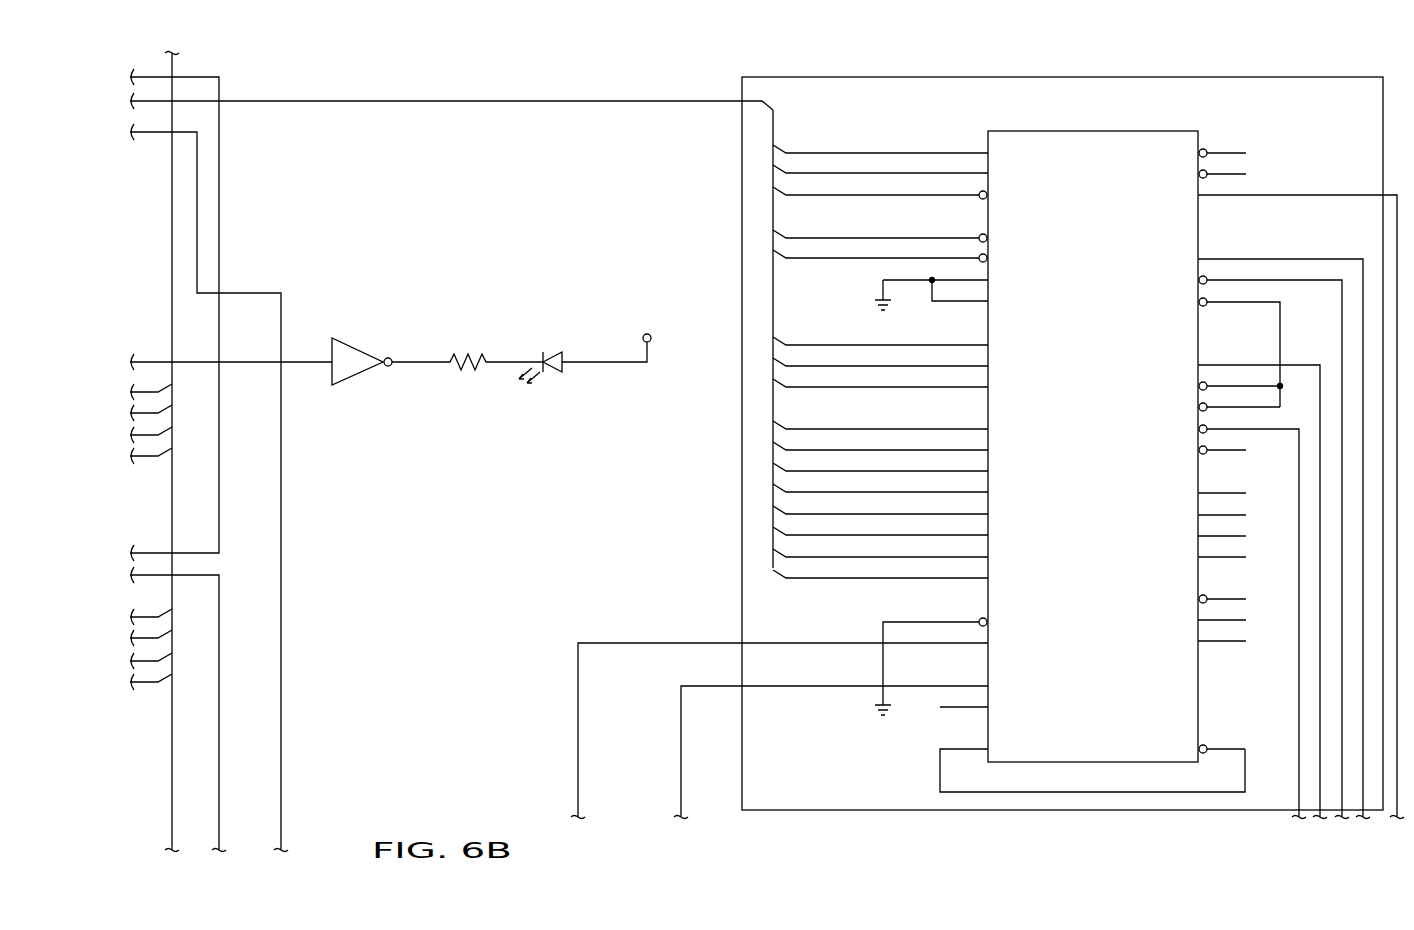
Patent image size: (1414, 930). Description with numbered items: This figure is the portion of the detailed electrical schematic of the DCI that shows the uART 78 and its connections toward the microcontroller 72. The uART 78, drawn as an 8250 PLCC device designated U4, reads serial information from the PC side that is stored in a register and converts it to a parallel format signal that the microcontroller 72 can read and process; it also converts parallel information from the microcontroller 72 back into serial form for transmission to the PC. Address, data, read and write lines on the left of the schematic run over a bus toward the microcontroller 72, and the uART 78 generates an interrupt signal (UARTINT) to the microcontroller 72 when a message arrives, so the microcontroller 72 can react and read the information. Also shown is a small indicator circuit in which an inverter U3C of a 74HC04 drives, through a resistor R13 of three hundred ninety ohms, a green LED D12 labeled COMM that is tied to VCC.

The microcontroller 72 is at (281, 695).
The uART 78 is at (1265, 77).
The 8250 PLCC UART chip U4 is at (1093, 447).
The 74HC04 inverter U3C is at (360, 361).
The 390 ohm resistor R13 is at (467, 340).
The green LED D12 is at (584, 329).